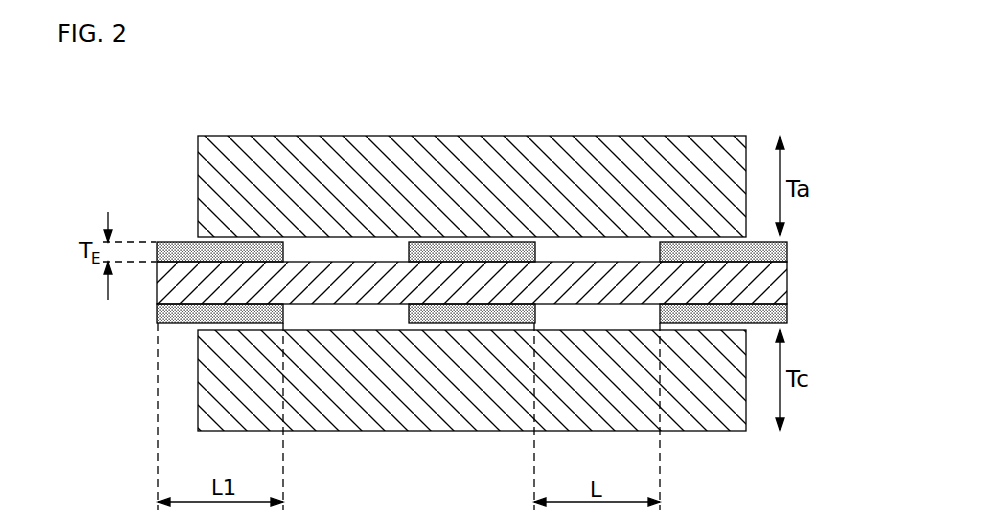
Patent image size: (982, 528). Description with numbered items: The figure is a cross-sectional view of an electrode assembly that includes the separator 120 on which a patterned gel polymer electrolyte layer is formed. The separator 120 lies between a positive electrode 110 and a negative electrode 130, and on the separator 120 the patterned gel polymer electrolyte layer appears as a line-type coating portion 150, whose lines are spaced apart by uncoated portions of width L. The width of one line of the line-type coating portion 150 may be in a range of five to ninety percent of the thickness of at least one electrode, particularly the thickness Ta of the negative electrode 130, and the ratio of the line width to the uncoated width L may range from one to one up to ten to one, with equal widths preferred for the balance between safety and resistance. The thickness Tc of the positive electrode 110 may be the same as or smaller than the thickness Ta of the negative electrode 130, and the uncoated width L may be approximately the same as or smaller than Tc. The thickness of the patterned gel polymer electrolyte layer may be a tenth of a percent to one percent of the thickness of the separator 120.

The positive electrode 110 is at (390, 432).
The separator 120 is at (787, 279).
The negative electrode 130 is at (477, 148).
The line-type coating portion 150 is at (787, 252).